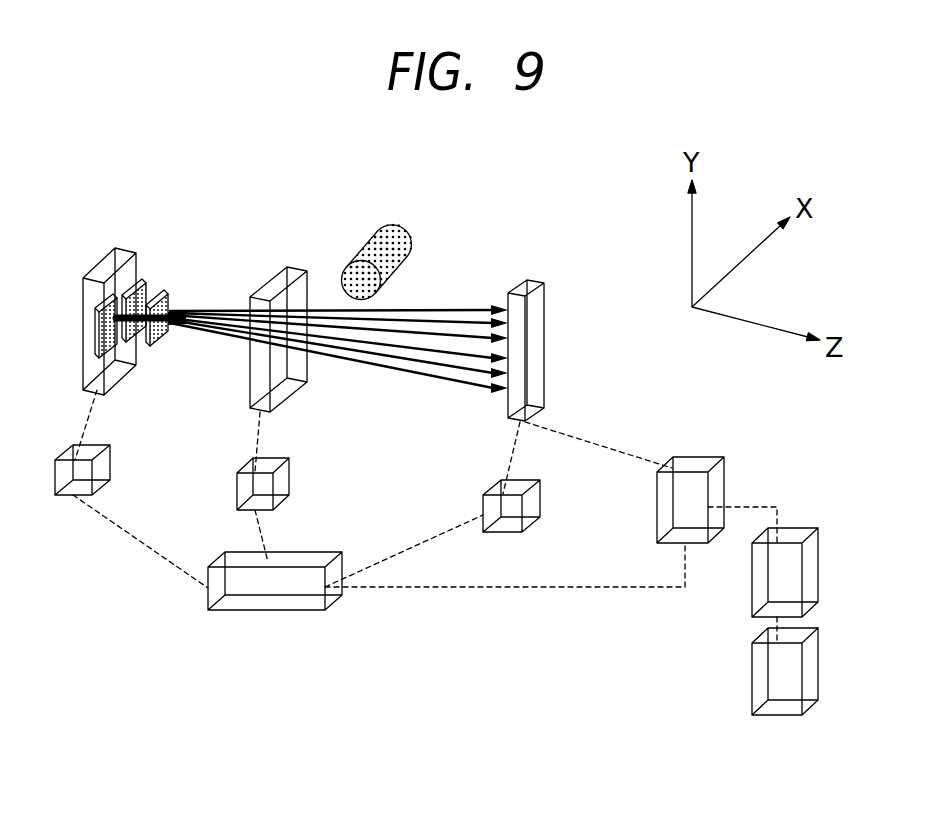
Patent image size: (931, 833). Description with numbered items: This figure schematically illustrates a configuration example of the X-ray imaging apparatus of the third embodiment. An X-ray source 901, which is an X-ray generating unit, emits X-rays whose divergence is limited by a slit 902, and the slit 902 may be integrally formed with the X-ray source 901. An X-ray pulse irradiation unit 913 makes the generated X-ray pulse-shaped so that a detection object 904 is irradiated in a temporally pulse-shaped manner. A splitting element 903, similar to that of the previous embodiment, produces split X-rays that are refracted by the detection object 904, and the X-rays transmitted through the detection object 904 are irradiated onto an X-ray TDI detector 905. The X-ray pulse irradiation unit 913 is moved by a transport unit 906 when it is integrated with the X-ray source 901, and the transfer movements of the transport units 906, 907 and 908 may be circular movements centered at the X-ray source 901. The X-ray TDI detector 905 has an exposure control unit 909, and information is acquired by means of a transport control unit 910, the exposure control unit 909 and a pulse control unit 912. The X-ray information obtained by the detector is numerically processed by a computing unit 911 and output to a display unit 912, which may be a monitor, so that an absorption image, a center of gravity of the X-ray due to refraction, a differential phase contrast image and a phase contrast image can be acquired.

The X-ray source 901 is at (98, 272).
The slit 902 is at (145, 277).
The X-ray pulse irradiation unit 913 is at (152, 346).
The splitting element 903 is at (275, 280).
The detection object 904 is at (387, 233).
The X-ray TDI detector 905 is at (518, 292).
The transport unit 906 is at (67, 497).
The transport unit 907 is at (285, 480).
The transport unit 908 is at (533, 500).
The exposure control unit 909 is at (692, 460).
The transport control unit 910 is at (267, 605).
The computing unit 911 is at (757, 580).
The display unit 912 is at (757, 682).